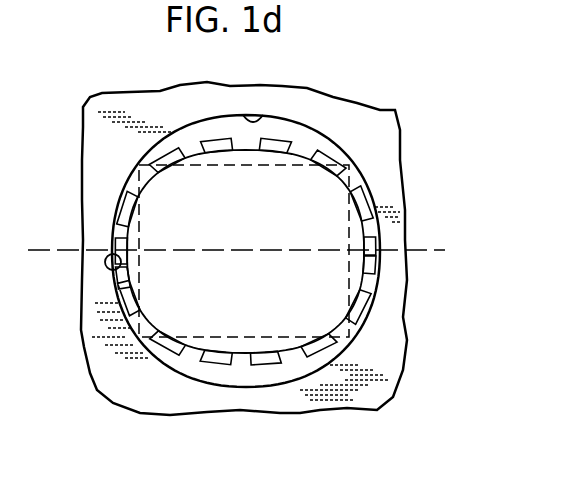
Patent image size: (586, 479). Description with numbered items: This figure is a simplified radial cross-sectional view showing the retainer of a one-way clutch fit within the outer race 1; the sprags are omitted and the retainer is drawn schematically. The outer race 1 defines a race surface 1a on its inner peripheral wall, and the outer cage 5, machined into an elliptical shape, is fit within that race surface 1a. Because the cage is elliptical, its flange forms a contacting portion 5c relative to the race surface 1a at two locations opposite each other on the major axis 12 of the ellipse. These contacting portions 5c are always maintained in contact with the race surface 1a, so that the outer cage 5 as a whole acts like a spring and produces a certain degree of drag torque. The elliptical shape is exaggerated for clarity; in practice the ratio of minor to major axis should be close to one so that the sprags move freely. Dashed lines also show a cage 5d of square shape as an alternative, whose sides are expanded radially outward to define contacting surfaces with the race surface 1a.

The outer race 1 is at (380, 137).
The race surface 1a is at (266, 116).
The outer cage 5 is at (347, 166).
The contacting portion 5c is at (106, 259).
The cage of a square shape 5d is at (358, 280).
The major axis 12 is at (45, 243).